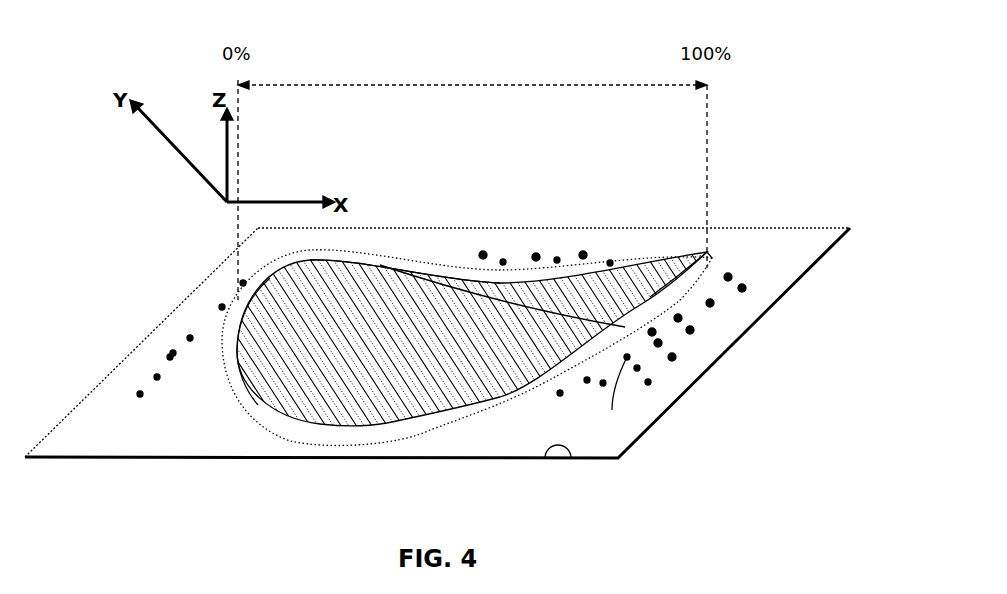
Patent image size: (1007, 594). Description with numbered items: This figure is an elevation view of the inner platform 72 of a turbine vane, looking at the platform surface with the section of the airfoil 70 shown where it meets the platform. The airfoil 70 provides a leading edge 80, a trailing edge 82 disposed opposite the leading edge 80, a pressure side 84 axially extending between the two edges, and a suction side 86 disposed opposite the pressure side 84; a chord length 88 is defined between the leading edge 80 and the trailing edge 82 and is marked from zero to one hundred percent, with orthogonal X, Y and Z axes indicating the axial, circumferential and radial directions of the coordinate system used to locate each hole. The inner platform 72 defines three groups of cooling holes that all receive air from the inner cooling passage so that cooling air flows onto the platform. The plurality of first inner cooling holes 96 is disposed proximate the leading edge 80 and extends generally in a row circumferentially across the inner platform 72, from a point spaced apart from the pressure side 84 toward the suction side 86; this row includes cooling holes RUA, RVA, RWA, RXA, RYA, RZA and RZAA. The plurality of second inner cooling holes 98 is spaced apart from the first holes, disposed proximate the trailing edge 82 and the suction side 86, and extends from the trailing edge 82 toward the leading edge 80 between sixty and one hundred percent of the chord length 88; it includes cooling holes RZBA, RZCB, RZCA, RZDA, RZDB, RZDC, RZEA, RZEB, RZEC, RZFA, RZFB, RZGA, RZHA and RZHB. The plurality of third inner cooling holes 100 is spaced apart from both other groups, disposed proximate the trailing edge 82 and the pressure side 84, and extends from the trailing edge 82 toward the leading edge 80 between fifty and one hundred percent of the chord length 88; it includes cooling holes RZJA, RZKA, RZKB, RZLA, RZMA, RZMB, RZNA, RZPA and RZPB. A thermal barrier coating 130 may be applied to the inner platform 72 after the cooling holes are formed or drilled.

The airfoil 70 is at (282, 440).
The inner platform 72 is at (792, 323).
The leading edge 80 is at (208, 322).
The trailing edge 82 is at (713, 260).
The pressure side 84 is at (420, 262).
The suction side 86 is at (387, 424).
The chord length 88 is at (460, 84).
The plurality of first inner cooling holes 96 is at (138, 417).
The plurality of second inner cooling holes 98 is at (787, 424).
The plurality of third inner cooling holes 100 is at (593, 238).
The thermal barrier coating 130 is at (574, 458).
The cooling hole RUA is at (243, 283).
The cooling hole RVA is at (222, 307).
The cooling hole RWA is at (160, 376).
The cooling hole RXA is at (190, 338).
The cooling hole RYA is at (170, 357).
The cooling hole RZA is at (173, 353).
The cooling hole RZAA is at (140, 394).
The cooling hole RZBA is at (552, 447).
The cooling hole RZCA is at (603, 383).
The cooling hole RZCB is at (587, 382).
The cooling hole RZDA is at (672, 357).
The cooling hole RZDB is at (648, 382).
The cooling hole RZDC is at (560, 395).
The cooling hole RZEA is at (658, 343).
The cooling hole RZEB is at (652, 332).
The cooling hole RZEC is at (612, 309).
The cooling hole RZFA is at (690, 330).
The cooling hole RZFB is at (678, 318).
The cooling hole RZGA is at (710, 303).
The cooling hole RZHA is at (742, 288).
The cooling hole RZHB is at (728, 277).
The cooling hole RZJA is at (710, 303).
The cooling hole RZKA is at (583, 255).
The cooling hole RZKB is at (610, 263).
The cooling hole RZLA is at (557, 260).
The cooling hole RZMA is at (536, 257).
The cooling hole RZMB is at (540, 282).
The cooling hole RZNA is at (503, 262).
The cooling hole RZPA is at (483, 255).
The cooling hole RZPB is at (483, 255).